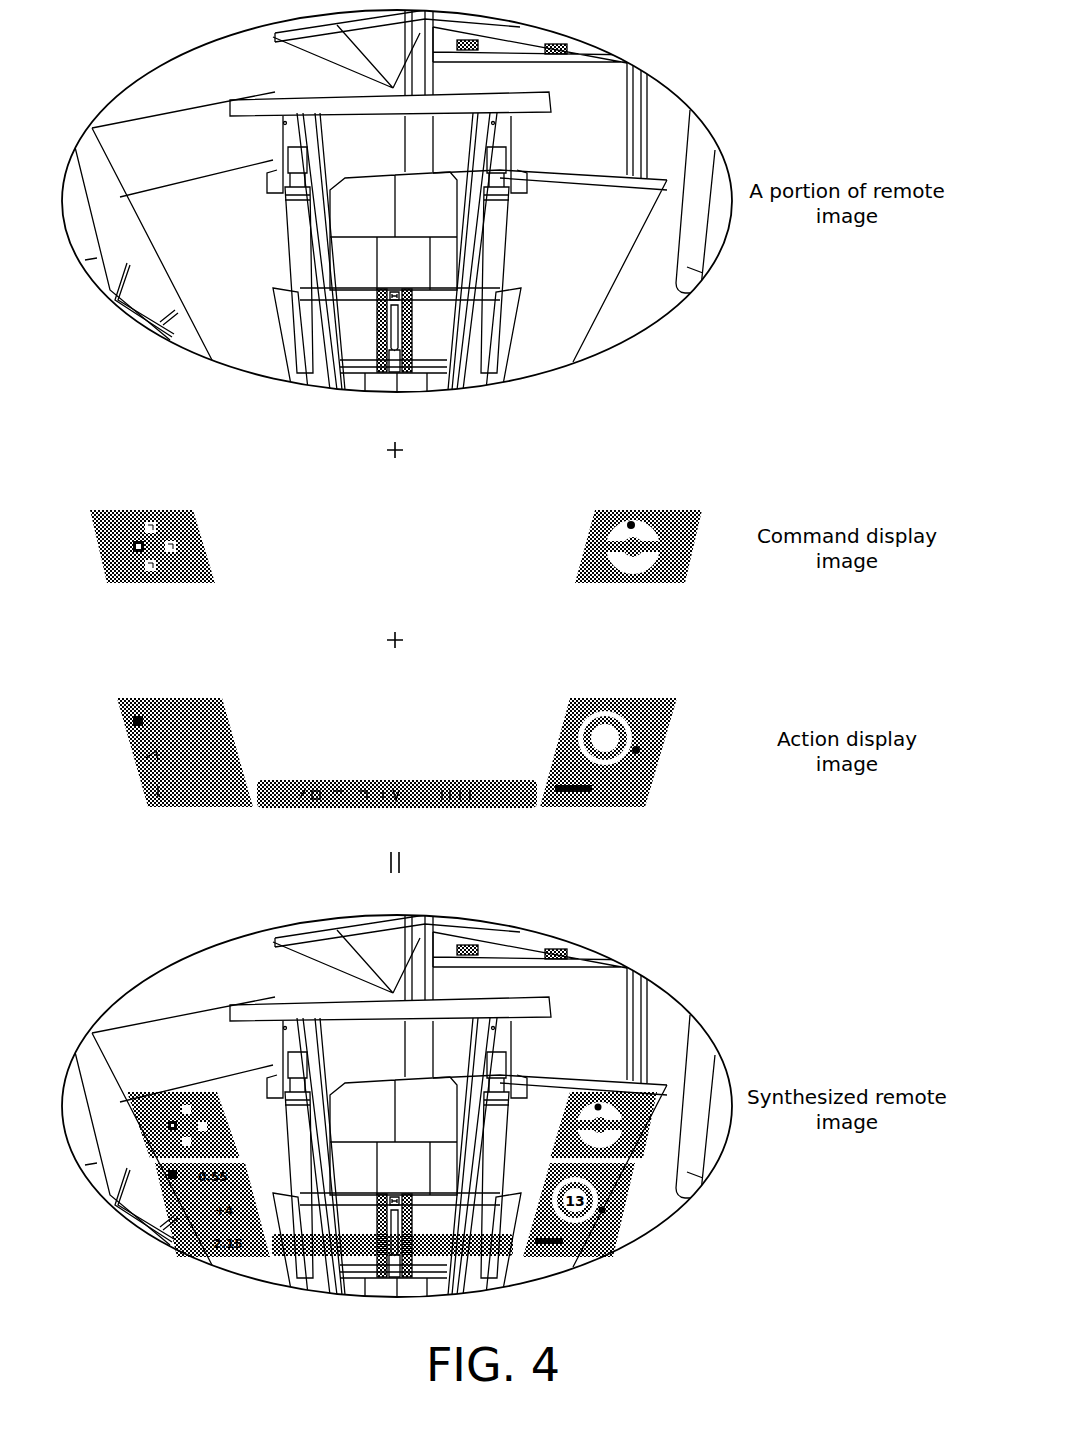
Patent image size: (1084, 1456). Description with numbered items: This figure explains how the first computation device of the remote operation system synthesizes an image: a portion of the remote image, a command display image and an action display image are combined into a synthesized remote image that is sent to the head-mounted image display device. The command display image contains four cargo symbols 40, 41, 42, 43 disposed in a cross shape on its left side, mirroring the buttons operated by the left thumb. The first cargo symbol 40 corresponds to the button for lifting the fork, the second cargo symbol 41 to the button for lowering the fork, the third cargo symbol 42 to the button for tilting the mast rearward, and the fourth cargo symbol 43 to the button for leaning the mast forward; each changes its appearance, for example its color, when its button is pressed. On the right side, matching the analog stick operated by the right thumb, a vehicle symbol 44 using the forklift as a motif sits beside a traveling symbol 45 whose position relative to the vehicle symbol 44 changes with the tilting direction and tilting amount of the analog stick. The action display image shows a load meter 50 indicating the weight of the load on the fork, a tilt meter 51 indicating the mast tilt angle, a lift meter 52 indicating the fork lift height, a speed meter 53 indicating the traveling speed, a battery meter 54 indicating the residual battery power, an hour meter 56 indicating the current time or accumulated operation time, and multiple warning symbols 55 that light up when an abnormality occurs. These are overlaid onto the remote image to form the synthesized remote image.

The first cargo symbol 40 is at (157, 520).
The second cargo symbol 41 is at (152, 575).
The third cargo symbol 42 is at (185, 546).
The fourth cargo symbol 43 is at (130, 546).
The vehicle symbol 44 is at (633, 560).
The traveling symbol 45 is at (631, 520).
The load meter 50 is at (125, 720).
The tilt meter 51 is at (140, 757).
The lift meter 52 is at (148, 790).
The speed meter 53 is at (655, 735).
The battery meter 54 is at (592, 793).
The warning symbols 55 is at (410, 782).
The hour meter 56 is at (292, 782).